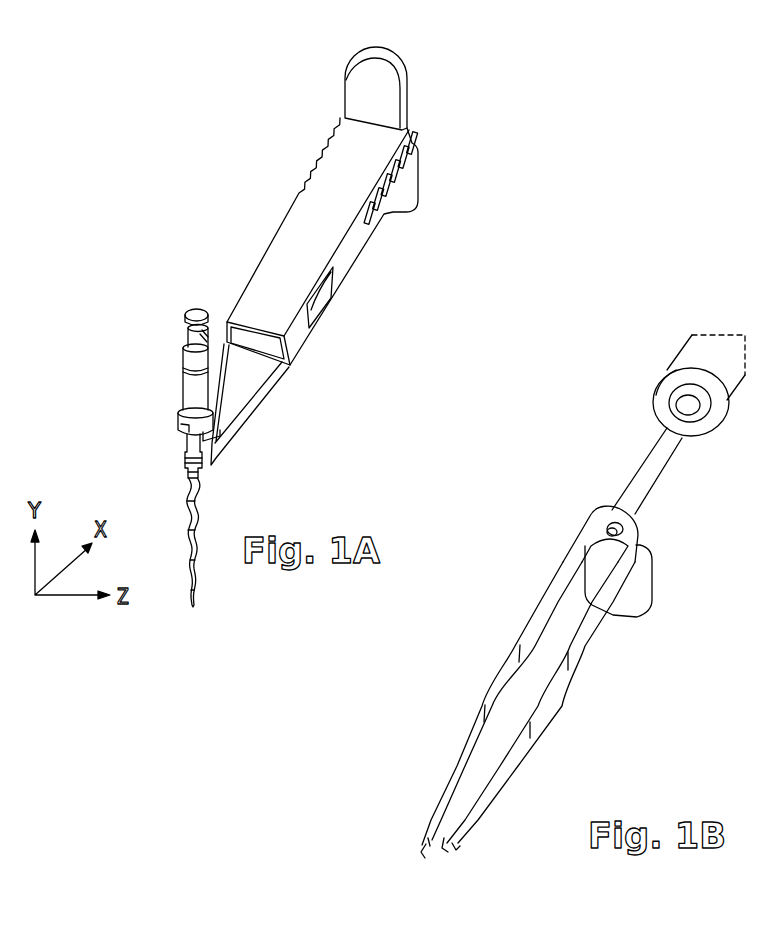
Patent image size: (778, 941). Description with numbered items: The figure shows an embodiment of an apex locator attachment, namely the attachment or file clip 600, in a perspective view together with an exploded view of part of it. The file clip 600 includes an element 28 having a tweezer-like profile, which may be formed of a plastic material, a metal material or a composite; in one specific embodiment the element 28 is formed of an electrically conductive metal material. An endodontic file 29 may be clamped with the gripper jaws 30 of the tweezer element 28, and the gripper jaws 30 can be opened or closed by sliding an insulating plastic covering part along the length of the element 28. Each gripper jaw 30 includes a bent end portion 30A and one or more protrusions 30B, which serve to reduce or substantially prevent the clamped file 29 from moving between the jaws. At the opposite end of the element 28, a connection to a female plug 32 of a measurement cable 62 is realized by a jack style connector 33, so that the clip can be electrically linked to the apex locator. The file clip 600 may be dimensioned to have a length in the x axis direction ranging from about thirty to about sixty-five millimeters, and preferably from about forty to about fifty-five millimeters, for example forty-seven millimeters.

In FIG. 1A, the attachment/file clip 600 is at (258, 166).
In FIG. 1A, the endodontic file 29 is at (193, 362).
In FIG. 1B, the measurement cable 62 is at (698, 342).
In FIG. 1B, the female plug 32 is at (683, 405).
In FIG. 1B, the jack style connector 33 is at (660, 467).
In FIG. 1B, the element 28 is at (548, 722).
In FIG. 1B, the gripper jaws 30 is at (427, 848).
In FIG. 1B, the bent end portion 30A is at (448, 852).
In FIG. 1B, the protrusions 30B is at (432, 838).